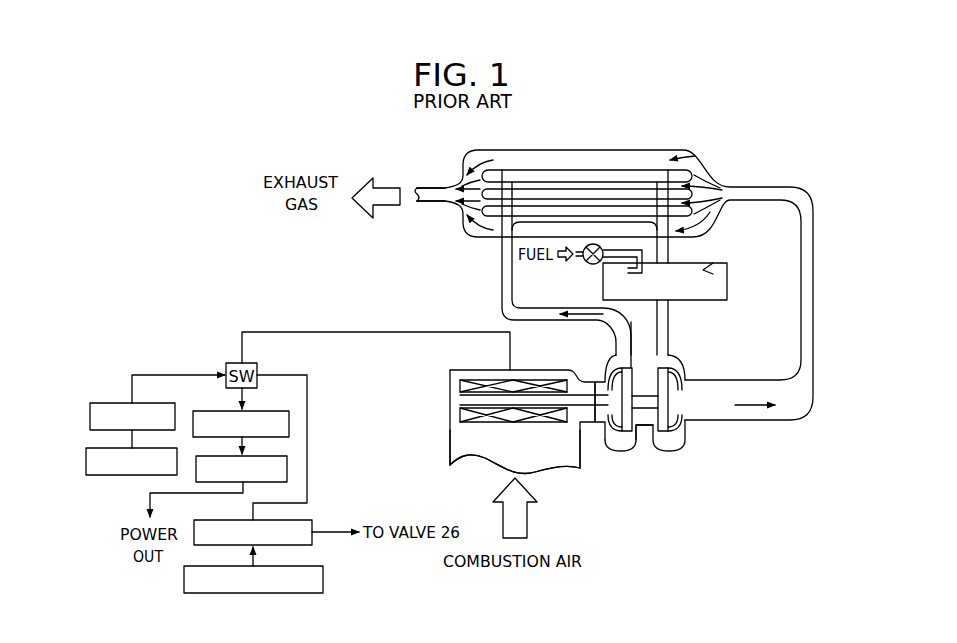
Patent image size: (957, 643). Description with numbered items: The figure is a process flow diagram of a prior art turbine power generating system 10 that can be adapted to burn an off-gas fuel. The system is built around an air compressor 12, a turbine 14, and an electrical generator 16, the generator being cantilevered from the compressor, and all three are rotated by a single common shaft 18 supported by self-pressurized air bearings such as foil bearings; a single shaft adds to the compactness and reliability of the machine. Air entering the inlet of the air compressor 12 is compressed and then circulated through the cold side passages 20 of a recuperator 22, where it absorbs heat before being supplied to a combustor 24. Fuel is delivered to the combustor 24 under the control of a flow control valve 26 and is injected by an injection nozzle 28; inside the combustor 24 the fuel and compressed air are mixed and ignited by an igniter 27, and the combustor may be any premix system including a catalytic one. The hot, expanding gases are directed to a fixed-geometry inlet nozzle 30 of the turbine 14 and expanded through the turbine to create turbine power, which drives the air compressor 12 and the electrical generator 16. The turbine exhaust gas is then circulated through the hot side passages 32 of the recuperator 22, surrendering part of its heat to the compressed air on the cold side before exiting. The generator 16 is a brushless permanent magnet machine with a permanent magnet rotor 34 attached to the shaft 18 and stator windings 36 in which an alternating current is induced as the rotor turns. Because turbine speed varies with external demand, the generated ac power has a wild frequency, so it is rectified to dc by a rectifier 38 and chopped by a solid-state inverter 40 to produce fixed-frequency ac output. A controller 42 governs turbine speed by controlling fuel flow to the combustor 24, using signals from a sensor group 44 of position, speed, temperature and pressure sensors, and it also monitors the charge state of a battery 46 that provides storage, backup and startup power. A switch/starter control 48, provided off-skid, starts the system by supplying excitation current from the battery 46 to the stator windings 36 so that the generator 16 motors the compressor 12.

The turbine power generating system 10 is at (210, 293).
The air compressor 12 is at (623, 455).
The turbine 14 is at (668, 455).
The electrical generator 16 is at (504, 418).
The shaft 18 is at (639, 395).
The cold side passages 20 is at (501, 263).
The recuperator 22 is at (709, 150).
The combustor 24 is at (700, 300).
The flow control valve 26 is at (586, 264).
The igniter 27 is at (714, 268).
The injection nozzle 28 is at (604, 277).
The inlet nozzle 30 is at (669, 348).
The hot side passages 32 is at (470, 152).
The permanent magnet rotor 34 is at (462, 399).
The stator windings 36 is at (472, 423).
The rectifier 38 is at (273, 410).
The inverter 40 is at (285, 456).
The controller 42 is at (313, 520).
The sensor group 44 is at (323, 578).
The battery 46 is at (86, 452).
The switch/starter control 48 is at (105, 402).